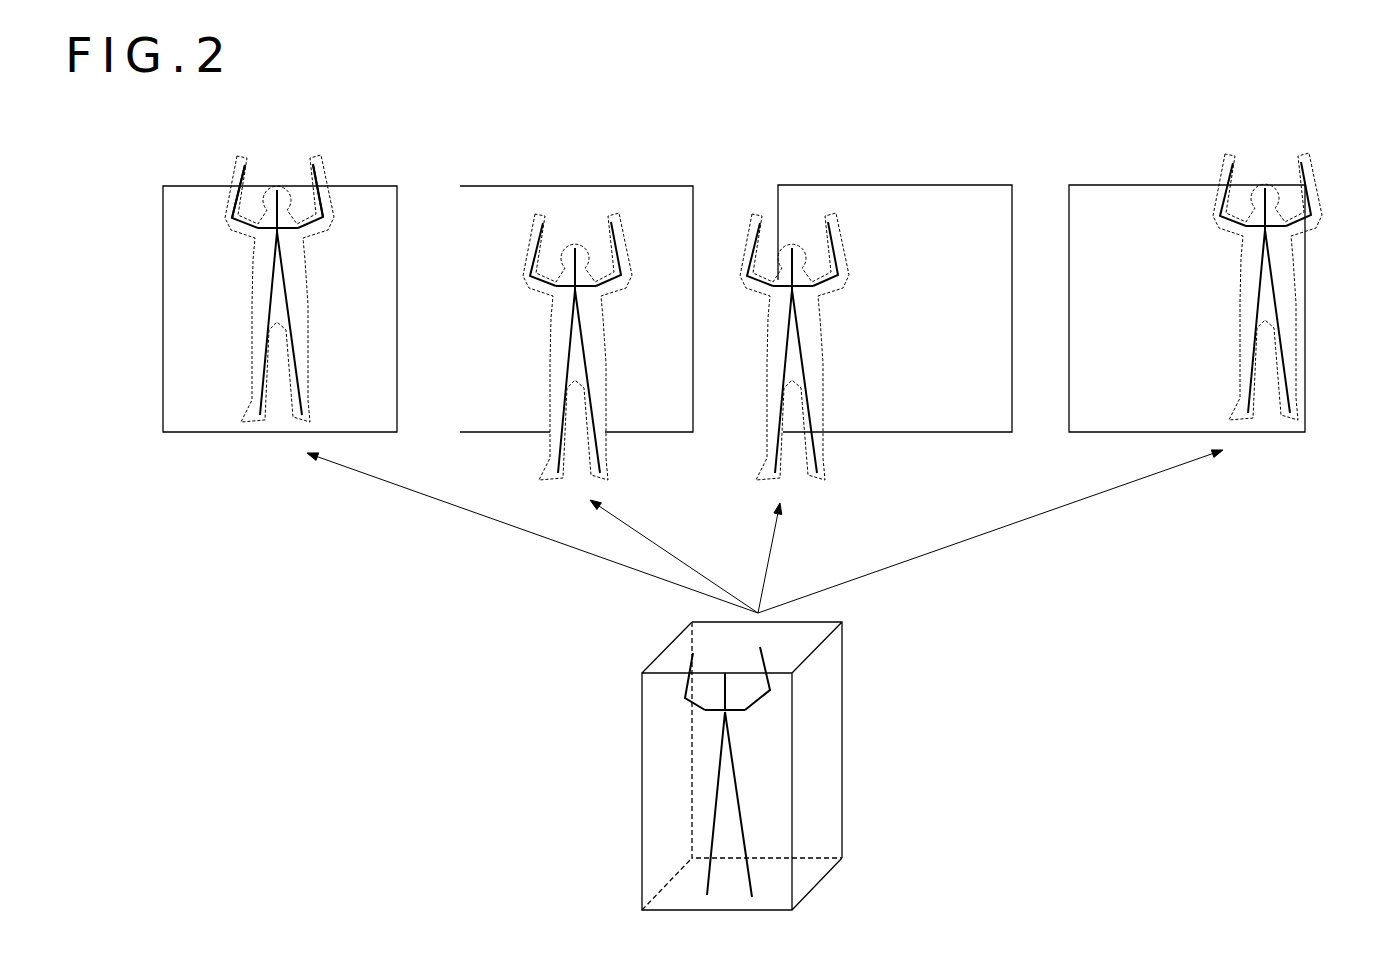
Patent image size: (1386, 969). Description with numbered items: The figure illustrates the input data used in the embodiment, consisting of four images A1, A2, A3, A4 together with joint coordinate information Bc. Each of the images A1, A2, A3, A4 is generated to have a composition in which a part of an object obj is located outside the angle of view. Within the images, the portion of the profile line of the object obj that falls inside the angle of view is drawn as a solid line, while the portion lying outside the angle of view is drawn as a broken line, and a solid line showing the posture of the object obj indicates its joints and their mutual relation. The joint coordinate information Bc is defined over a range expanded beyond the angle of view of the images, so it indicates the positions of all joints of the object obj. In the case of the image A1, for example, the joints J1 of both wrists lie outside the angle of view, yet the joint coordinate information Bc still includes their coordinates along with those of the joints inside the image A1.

The image A1 is at (372, 186).
The image A2 is at (670, 186).
The image A3 is at (988, 185).
The image A4 is at (1143, 185).
The object obj is at (305, 383).
The joints of both wrists J1 is at (305, 167).
The joint coordinate information Bc is at (827, 877).